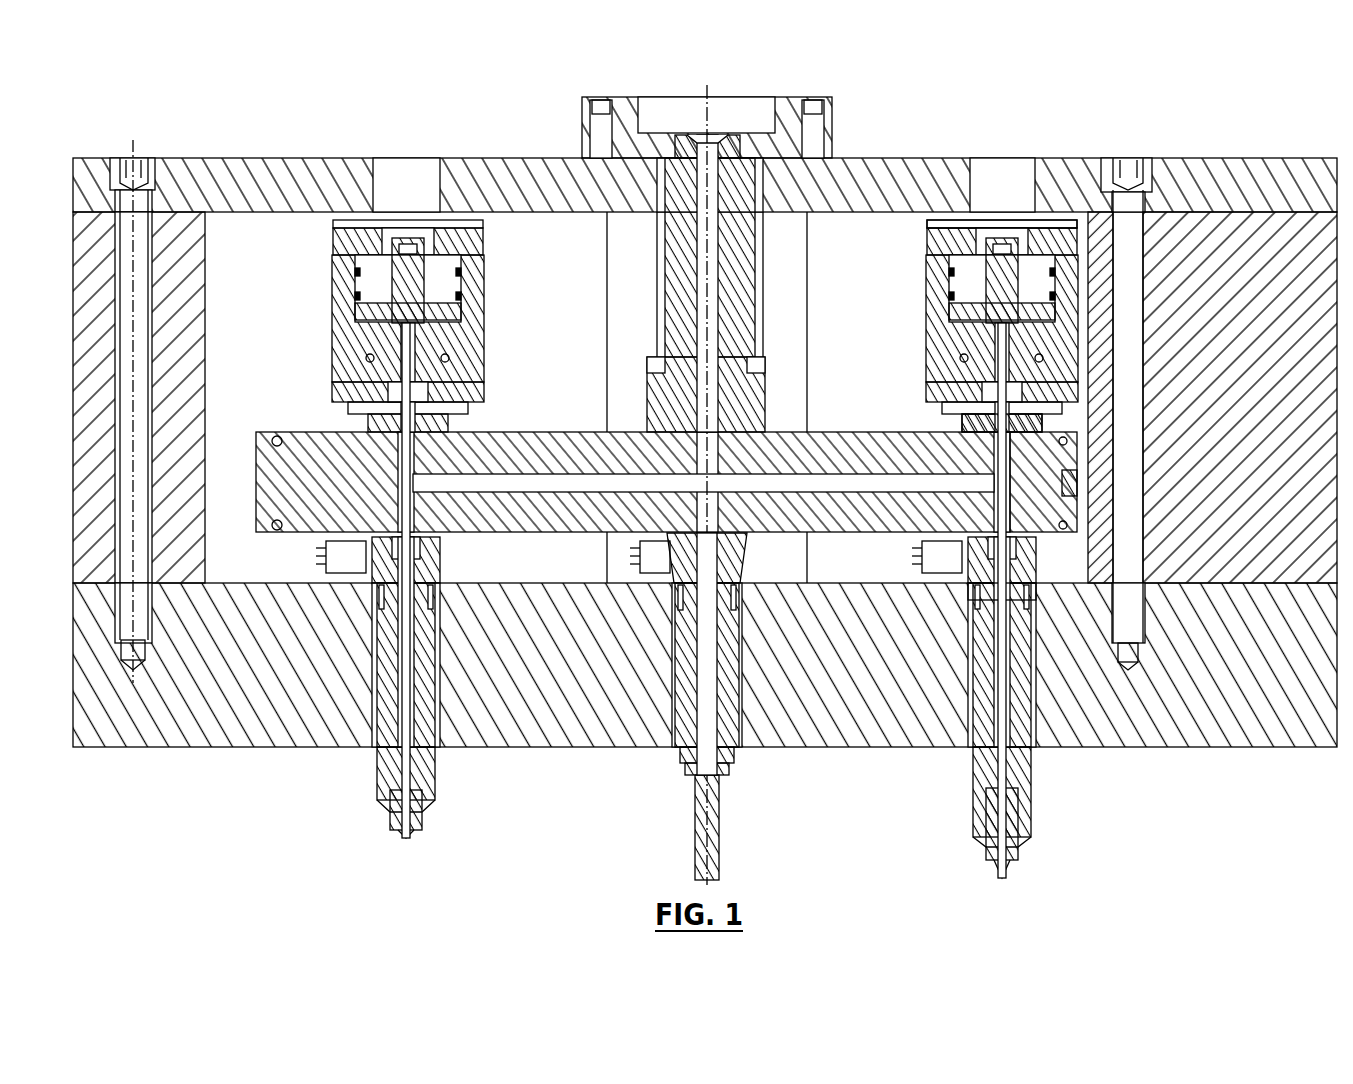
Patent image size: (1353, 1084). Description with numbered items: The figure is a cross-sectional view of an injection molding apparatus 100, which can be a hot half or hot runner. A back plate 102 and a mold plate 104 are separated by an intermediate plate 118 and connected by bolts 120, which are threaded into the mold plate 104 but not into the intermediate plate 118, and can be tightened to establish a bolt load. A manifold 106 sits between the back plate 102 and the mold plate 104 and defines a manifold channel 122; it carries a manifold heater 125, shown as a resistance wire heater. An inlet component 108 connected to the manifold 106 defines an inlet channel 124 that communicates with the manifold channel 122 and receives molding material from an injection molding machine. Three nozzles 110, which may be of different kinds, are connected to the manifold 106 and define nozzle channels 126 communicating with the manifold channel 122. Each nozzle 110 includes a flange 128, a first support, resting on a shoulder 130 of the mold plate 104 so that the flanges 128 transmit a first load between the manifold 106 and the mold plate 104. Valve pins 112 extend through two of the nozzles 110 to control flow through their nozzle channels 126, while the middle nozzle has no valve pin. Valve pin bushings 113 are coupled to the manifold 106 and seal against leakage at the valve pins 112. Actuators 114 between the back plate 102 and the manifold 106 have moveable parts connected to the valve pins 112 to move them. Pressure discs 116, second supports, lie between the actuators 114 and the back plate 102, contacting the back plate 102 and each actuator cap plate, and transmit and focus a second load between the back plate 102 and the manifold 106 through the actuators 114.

The injection molding apparatus 100 is at (705, 469).
The back plate 102 is at (1257, 168).
The mold plate 104 is at (1210, 735).
The manifold 106 is at (666, 465).
The inlet component 108 is at (705, 283).
The nozzles 110 is at (1025, 787).
The valve pins 112 is at (1002, 762).
The valve pin bushings 113 is at (958, 430).
The actuators 114 is at (940, 327).
The pressure discs 116 is at (937, 220).
The intermediate plate 118 is at (1209, 483).
The bolts 120 is at (1114, 205).
The manifold channel 122 is at (837, 483).
The inlet channel 124 is at (700, 268).
The manifold heater 125 is at (1084, 437).
The nozzle channels 126 is at (993, 723).
The flange 128 is at (968, 586).
The shoulder 130 is at (1040, 620).